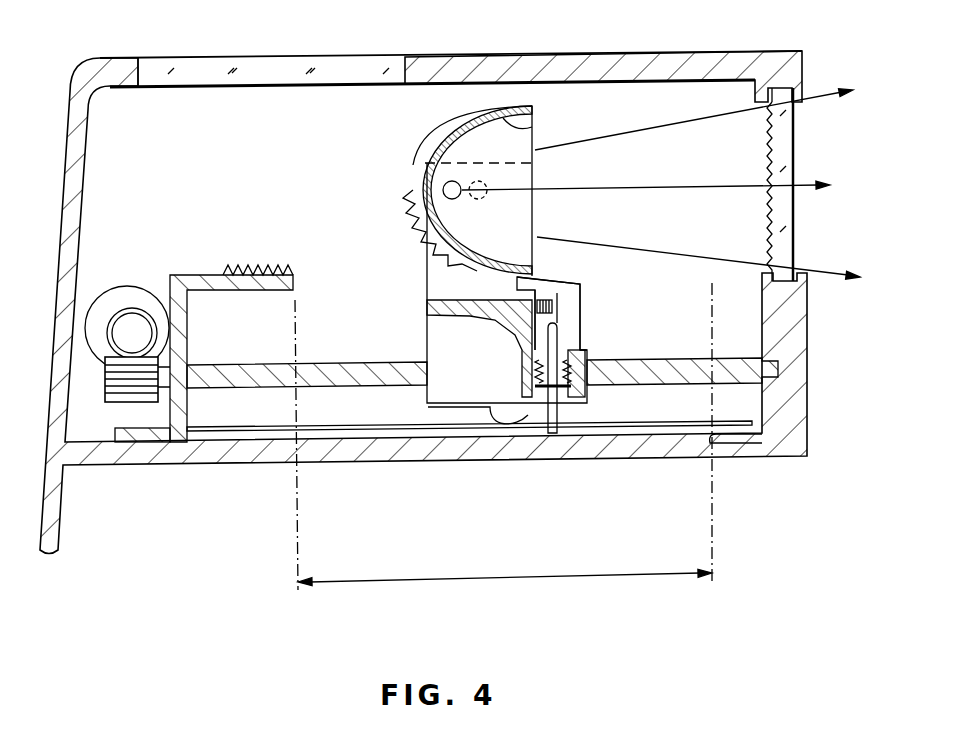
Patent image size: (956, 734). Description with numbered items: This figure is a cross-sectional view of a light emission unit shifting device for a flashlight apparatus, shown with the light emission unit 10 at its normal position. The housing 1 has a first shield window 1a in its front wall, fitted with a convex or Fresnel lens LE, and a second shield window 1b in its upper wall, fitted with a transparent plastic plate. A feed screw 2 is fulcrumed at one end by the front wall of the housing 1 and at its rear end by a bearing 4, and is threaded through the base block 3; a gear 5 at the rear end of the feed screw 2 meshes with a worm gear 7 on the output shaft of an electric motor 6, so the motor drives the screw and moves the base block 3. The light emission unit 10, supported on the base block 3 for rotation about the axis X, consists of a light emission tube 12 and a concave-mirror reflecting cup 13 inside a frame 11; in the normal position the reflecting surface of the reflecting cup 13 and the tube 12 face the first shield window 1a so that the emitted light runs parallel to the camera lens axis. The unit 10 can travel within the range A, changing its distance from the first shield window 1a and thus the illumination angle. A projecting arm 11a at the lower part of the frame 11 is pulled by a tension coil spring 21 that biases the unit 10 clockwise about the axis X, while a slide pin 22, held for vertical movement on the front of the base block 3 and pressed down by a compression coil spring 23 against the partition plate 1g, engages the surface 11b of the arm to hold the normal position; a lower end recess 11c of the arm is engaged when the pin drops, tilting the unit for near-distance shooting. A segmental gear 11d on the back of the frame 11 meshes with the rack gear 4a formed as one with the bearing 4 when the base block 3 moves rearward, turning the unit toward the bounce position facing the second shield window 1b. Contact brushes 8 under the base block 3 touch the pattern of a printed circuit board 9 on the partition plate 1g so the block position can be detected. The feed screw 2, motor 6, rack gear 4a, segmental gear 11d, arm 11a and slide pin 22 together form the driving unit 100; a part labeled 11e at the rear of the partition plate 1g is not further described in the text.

The housing 1 is at (798, 423).
The first shield window 1a is at (797, 270).
The second shield window 1b is at (352, 57).
The partition plate 1g is at (188, 457).
The feed screw 2 is at (260, 386).
The base block 3 is at (442, 395).
The bearing 4 is at (181, 275).
The rack gear 4a is at (268, 262).
The gear 5 is at (116, 397).
The electric motor 6 is at (110, 298).
The worm gear 7 is at (133, 308).
The contact brushes 8 is at (499, 430).
The printed circuit board 9 is at (680, 421).
The light emission unit 10 is at (540, 95).
The frame 11 is at (460, 123).
The projecting arm 11a is at (575, 287).
The surface of projecting arm 11b is at (557, 320).
The lower end recess 11c is at (583, 335).
The segmental gear 11d is at (403, 192).
The foot of reflector 11e is at (757, 448).
The light emission tube 12 is at (462, 180).
The reflecting cup 13 is at (535, 128).
The tension coil spring 21 is at (547, 300).
The slide pin 22 is at (553, 437).
The compression coil spring 23 is at (584, 398).
The driving unit 100 is at (318, 238).
The axis X is at (482, 197).
The Fresnel lens LE is at (787, 203).
The range A is at (503, 436).